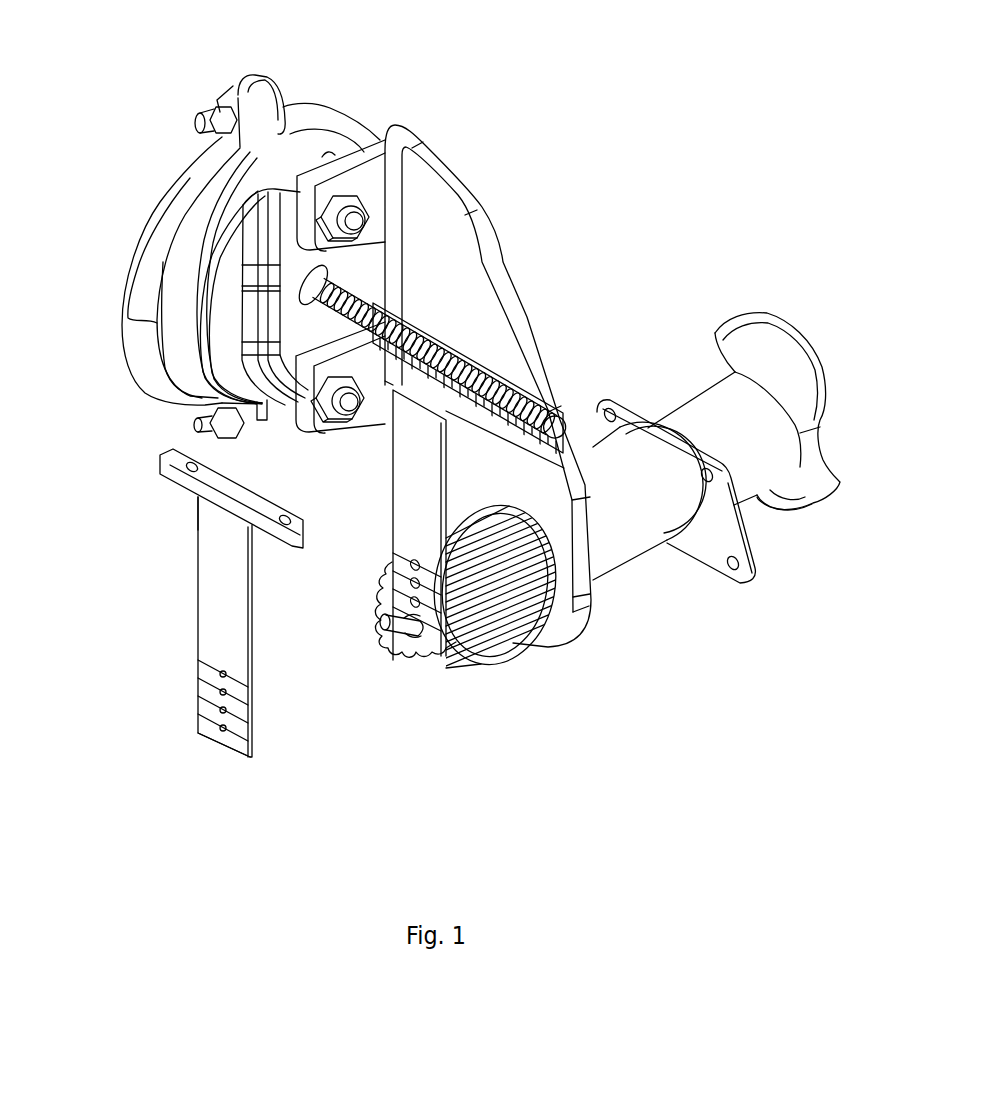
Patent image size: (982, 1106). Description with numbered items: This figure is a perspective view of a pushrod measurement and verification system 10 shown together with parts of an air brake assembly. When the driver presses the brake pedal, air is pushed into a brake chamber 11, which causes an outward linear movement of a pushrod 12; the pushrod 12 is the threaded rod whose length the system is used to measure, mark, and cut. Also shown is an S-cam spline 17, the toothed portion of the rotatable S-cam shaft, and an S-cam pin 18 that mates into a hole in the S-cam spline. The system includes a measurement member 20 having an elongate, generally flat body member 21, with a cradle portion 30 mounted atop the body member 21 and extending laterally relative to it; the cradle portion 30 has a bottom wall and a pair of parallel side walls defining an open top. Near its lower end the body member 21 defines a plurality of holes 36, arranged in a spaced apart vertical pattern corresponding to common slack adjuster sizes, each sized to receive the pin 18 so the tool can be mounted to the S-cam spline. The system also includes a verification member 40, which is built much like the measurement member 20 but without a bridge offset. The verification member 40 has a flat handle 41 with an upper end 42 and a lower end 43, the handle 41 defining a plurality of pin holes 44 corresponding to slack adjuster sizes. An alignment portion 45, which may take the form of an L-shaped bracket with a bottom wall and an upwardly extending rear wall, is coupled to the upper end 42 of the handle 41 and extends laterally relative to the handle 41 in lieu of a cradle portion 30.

The pushrod measurement and verification system 10 is at (588, 88).
The brake chamber 11 is at (163, 220).
The pushrod 12 is at (538, 412).
The S-cam spline 17 is at (505, 640).
The S-cam pin 18 is at (383, 630).
The measurement member 20 is at (378, 478).
The body member 21 is at (410, 507).
The cradle portion 30 is at (482, 416).
The holes 36 is at (410, 584).
The verification member 40 is at (188, 608).
The handle 41 is at (220, 552).
The upper end 42 is at (200, 511).
The lower end 43 is at (224, 748).
The pin holes 44 is at (222, 693).
The alignment portion 45 is at (152, 456).